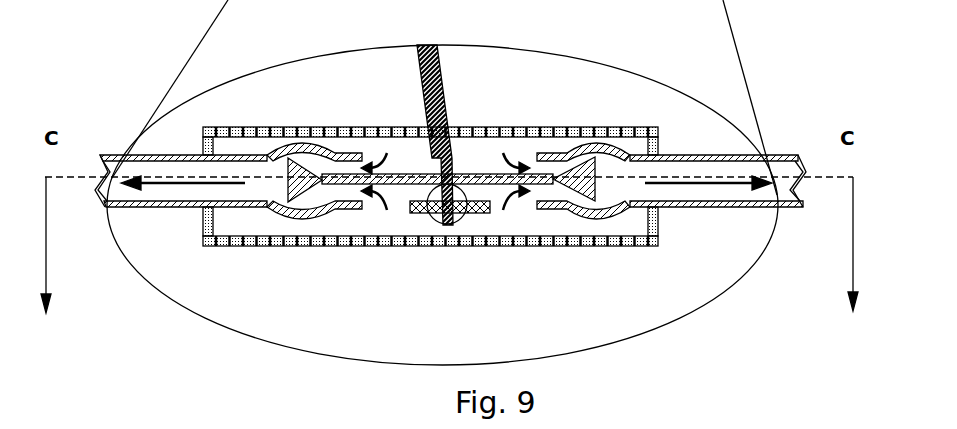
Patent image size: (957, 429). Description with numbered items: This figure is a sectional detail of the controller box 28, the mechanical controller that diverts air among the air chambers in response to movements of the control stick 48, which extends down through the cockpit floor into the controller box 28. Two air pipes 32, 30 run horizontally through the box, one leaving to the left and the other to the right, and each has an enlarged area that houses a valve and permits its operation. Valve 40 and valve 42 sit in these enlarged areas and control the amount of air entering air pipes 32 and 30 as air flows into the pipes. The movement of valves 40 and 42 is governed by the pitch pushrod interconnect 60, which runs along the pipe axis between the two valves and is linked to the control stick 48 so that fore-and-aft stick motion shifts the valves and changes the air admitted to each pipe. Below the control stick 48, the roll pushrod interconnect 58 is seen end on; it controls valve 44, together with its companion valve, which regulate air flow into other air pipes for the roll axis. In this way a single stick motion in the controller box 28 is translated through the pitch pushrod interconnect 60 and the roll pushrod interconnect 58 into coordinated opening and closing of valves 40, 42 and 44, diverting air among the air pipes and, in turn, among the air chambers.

The controller box 28 is at (247, 123).
The air pipe 30 is at (728, 147).
The air pipe 32 is at (147, 210).
The valve 40 is at (600, 163).
The valve 42 is at (284, 182).
The valve 44 is at (463, 228).
The control stick 48 is at (412, 58).
The roll pushrod interconnect 58 is at (473, 217).
The pitch pushrod interconnect 60 is at (493, 173).